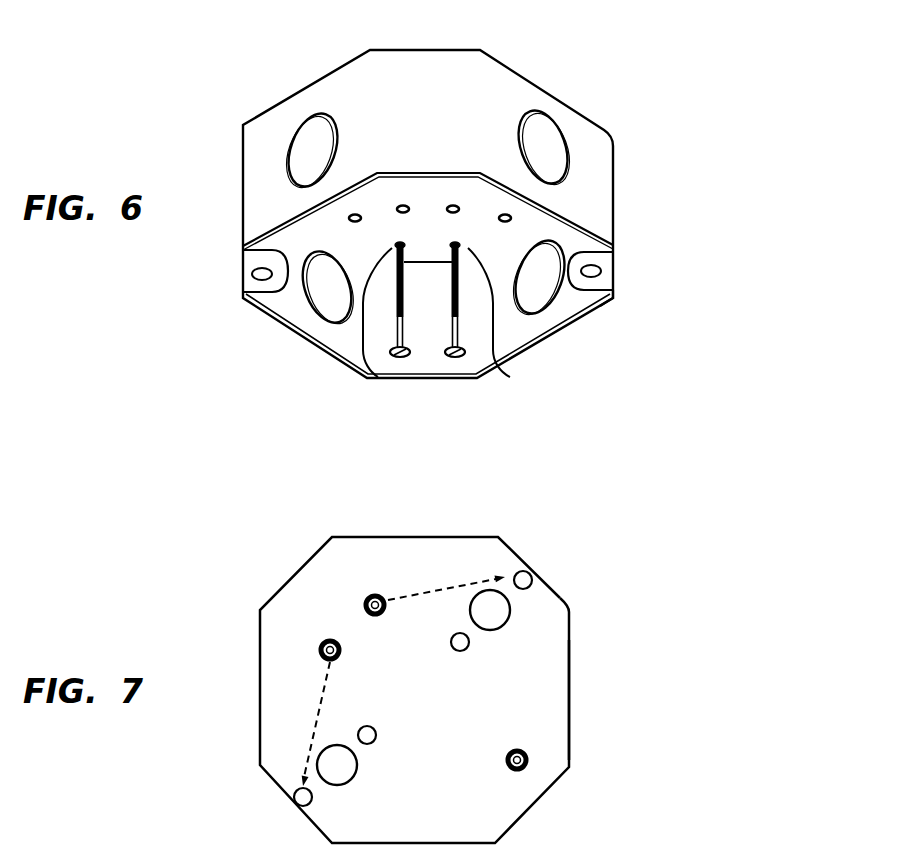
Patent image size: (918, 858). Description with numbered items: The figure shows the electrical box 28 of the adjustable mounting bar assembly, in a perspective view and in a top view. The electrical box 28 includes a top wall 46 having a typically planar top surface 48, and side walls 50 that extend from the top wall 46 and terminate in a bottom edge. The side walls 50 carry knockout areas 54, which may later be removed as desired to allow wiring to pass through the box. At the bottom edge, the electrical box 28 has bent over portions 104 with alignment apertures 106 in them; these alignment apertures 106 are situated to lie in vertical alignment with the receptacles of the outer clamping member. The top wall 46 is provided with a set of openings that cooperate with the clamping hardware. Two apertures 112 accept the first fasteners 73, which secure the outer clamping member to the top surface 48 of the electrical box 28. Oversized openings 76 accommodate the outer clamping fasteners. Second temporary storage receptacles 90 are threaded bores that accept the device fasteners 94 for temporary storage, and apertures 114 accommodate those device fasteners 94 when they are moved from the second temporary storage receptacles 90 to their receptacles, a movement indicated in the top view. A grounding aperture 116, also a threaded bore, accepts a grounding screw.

In FIG. 6, the electrical box 28 is at (709, 199).
In FIG. 7, the electrical box 28 is at (624, 619).
In FIG. 7, the top wall 46 is at (530, 720).
In FIG. 6, the top surface 48 is at (347, 65).
In FIG. 7, the top surface 48 is at (416, 755).
In FIG. 6, the side walls 50 is at (249, 220).
In FIG. 6, the knockout areas 54 is at (540, 128).
In FIG. 6, the first fasteners 73 is at (455, 206).
In FIG. 6, the oversized openings 76 is at (352, 215).
In FIG. 7, the oversized openings 76 is at (490, 630).
In FIG. 6, the second temporary storage receptacles 90 is at (362, 362).
In FIG. 7, the second temporary storage receptacles 90 is at (326, 642).
In FIG. 6, the device fasteners 94 is at (457, 360).
In FIG. 6, the bent over portions 104 is at (603, 268).
In FIG. 6, the alignment apertures 106 is at (583, 300).
In FIG. 7, the apertures 112 is at (458, 651).
In FIG. 7, the apertures 114 is at (523, 571).
In FIG. 7, the grounding aperture 116 is at (512, 772).